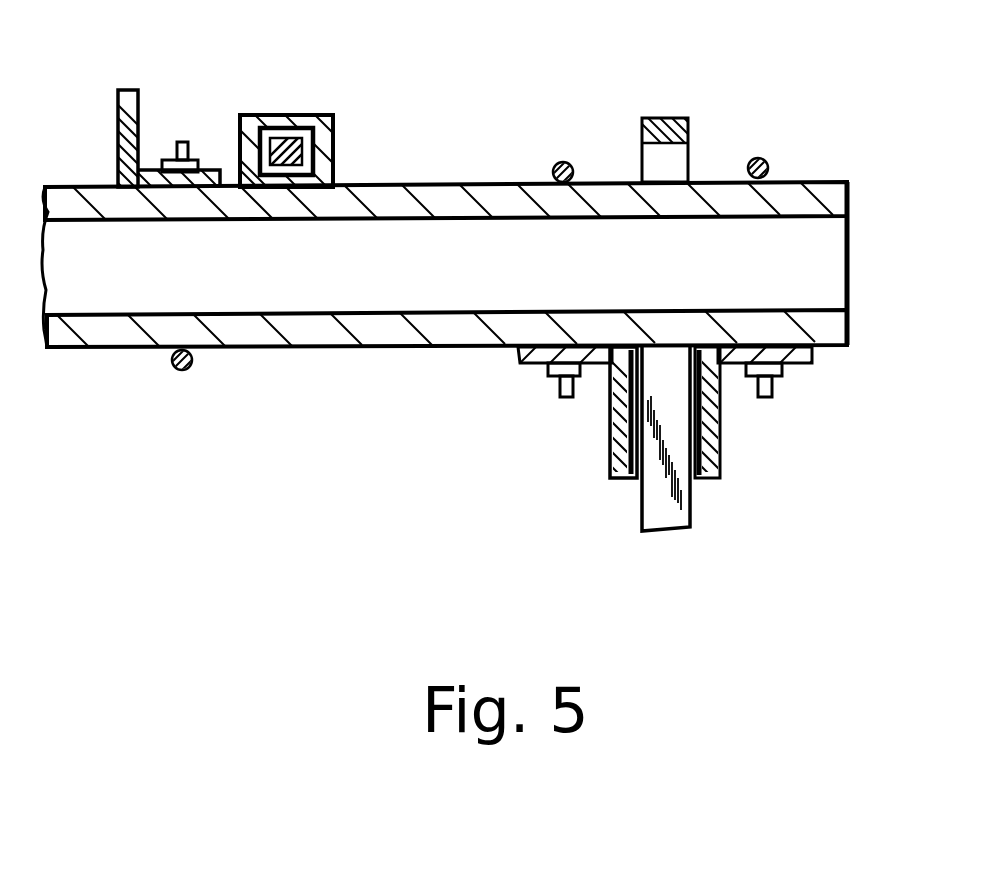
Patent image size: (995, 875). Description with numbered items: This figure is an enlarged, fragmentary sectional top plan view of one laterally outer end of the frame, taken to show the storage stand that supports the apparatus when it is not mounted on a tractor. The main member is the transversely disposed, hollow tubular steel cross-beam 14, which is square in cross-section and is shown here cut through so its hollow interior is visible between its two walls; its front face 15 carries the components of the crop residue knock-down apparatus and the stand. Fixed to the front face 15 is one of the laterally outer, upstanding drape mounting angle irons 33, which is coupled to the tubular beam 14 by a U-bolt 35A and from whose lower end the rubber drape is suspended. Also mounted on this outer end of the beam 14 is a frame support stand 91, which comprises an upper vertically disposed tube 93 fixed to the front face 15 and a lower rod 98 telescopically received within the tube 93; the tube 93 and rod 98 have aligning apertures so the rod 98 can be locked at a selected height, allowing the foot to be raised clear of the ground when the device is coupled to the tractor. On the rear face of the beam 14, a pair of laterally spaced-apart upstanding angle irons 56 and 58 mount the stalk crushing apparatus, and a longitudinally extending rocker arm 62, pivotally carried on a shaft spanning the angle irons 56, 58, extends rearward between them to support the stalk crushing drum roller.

The cross-beam 14 is at (845, 183).
The front face 15 is at (85, 185).
The drape mounting angle iron 33 is at (127, 90).
The U-bolt 35A is at (182, 371).
The angle iron 56 is at (720, 462).
The angle iron 58 is at (617, 432).
The rocker arm 62 is at (667, 512).
The frame support stand 91 is at (275, 113).
The upper vertically disposed tube 93 is at (311, 130).
The lower rod 98 is at (302, 153).